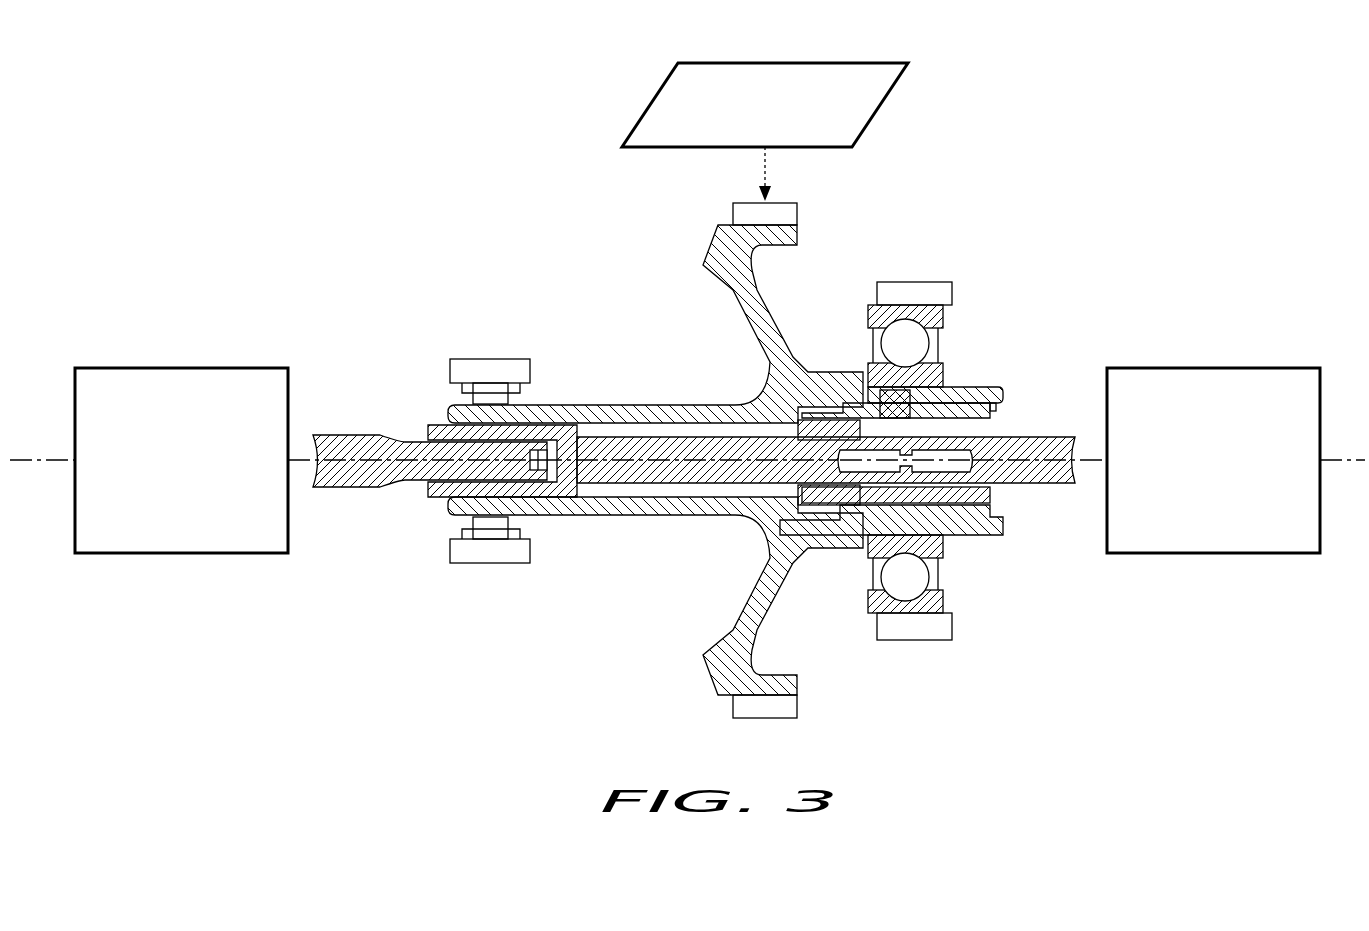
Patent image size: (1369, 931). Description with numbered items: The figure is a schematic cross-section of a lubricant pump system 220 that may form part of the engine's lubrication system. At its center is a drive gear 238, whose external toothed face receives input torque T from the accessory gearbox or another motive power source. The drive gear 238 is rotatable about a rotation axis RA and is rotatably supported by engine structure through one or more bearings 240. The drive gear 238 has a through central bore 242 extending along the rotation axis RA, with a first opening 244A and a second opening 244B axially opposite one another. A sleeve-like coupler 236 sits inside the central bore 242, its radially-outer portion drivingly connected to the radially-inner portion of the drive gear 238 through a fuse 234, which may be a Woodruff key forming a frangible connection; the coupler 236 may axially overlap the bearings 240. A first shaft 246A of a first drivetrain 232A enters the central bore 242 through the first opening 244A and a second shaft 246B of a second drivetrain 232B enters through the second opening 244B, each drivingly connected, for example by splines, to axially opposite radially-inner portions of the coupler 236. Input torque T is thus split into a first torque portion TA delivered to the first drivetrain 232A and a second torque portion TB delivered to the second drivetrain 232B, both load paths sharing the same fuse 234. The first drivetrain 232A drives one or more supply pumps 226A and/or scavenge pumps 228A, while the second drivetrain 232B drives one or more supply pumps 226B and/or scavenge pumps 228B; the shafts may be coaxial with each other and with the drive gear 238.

The lubricant pump system 220 is at (272, 160).
The input torque T is at (880, 107).
The supply pumps 226A is at (181, 460).
The scavenge pumps 228A is at (181, 522).
The supply pumps 226B is at (1213, 460).
The scavenge pumps 228B is at (1213, 522).
The drive gear 238 is at (718, 252).
The central bore 242 is at (761, 460).
The rotation axis RA is at (708, 450).
The first drivetrain 232A is at (312, 520).
The second drivetrain 232B is at (1065, 520).
The first shaft 246A is at (667, 475).
The second shaft 246B is at (1020, 473).
The bearings 240 is at (965, 320).
The fuse 234 is at (893, 403).
The coupler 236 is at (965, 507).
The first opening 244A is at (396, 486).
The second opening 244B is at (1015, 417).
The first torque portion TA is at (397, 410).
The second torque portion TB is at (1027, 422).